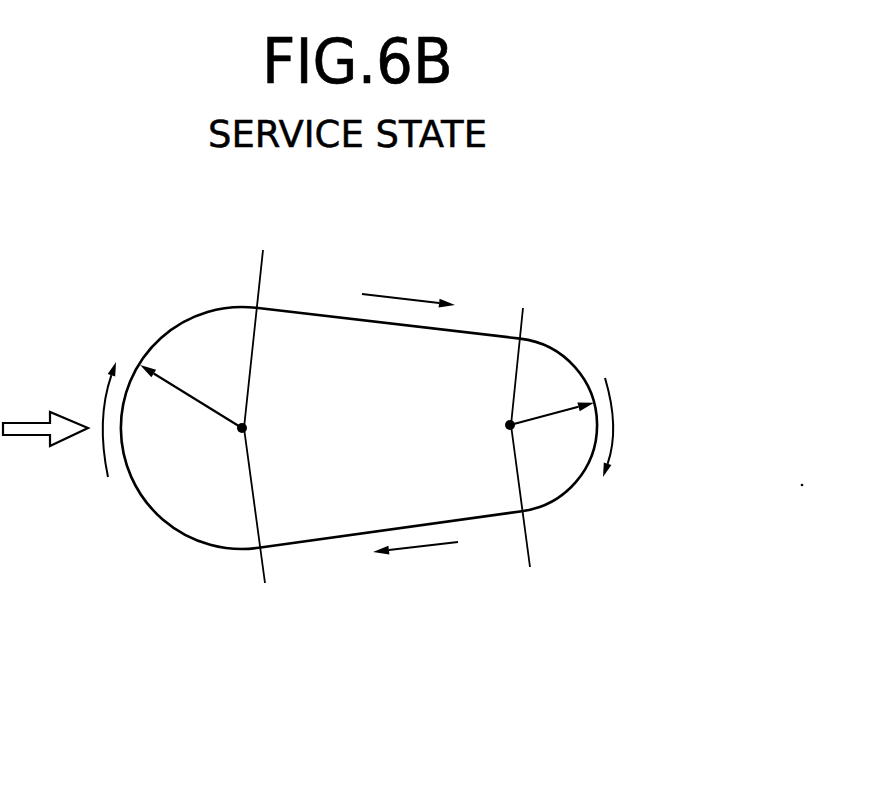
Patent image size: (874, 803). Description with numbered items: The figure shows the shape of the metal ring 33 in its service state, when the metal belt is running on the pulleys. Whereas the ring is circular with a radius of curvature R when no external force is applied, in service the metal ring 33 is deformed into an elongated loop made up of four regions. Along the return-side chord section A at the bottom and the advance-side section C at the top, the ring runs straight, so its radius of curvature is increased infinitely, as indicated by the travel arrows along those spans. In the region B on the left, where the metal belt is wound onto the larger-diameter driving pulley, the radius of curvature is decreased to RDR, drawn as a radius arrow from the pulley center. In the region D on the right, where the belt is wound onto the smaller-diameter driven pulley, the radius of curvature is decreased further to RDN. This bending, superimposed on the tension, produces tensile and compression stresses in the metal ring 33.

The metal ring 33 is at (194, 309).
The radius of curvature at the driving pulley RDR is at (191, 390).
The radius of curvature at the driven pulley RDN is at (552, 396).
The return-side chord section A is at (502, 512).
The region wound onto the driving pulley B is at (143, 502).
The advance-side section C is at (311, 300).
The region wound onto the driven pulley D is at (550, 348).